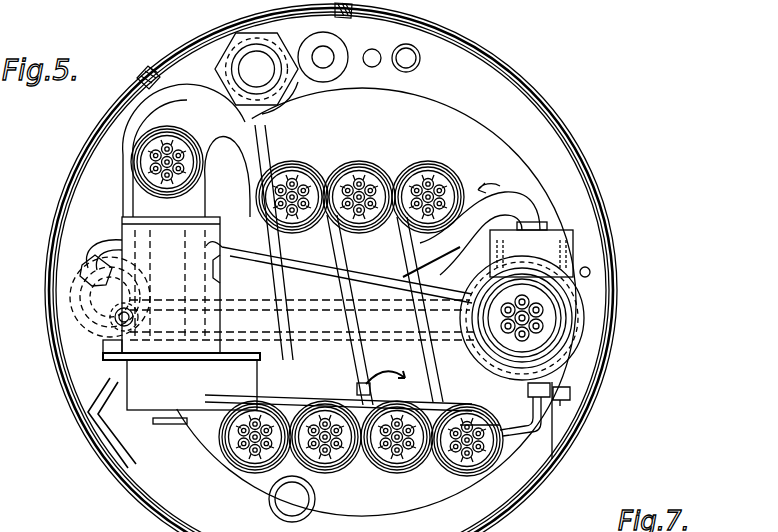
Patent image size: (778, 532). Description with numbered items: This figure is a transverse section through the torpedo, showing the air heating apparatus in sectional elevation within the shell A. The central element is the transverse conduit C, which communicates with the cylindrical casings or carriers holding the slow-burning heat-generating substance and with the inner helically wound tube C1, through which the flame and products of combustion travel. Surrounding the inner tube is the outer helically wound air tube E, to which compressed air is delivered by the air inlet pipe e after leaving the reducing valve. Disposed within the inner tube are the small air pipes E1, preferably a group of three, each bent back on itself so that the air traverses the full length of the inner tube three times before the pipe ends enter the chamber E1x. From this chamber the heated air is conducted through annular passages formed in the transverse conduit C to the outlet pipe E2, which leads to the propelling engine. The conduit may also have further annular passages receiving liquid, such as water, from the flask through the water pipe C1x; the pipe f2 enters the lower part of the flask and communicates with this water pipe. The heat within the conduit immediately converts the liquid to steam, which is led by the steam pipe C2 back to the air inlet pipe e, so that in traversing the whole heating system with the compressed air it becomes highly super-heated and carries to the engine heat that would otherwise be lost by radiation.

The shell A is at (517, 80).
The transverse conduit C is at (337, 168).
The inner helically wound tube C1 is at (136, 164).
The steam pipe C2 is at (291, 262).
The water pipe C1x is at (527, 429).
The air tube E is at (282, 167).
The small air pipes E1 is at (363, 212).
The outlet pipe E2 is at (188, 102).
The chamber E1x is at (550, 234).
The air inlet pipe e is at (76, 288).
The flask pipe f2 is at (400, 383).